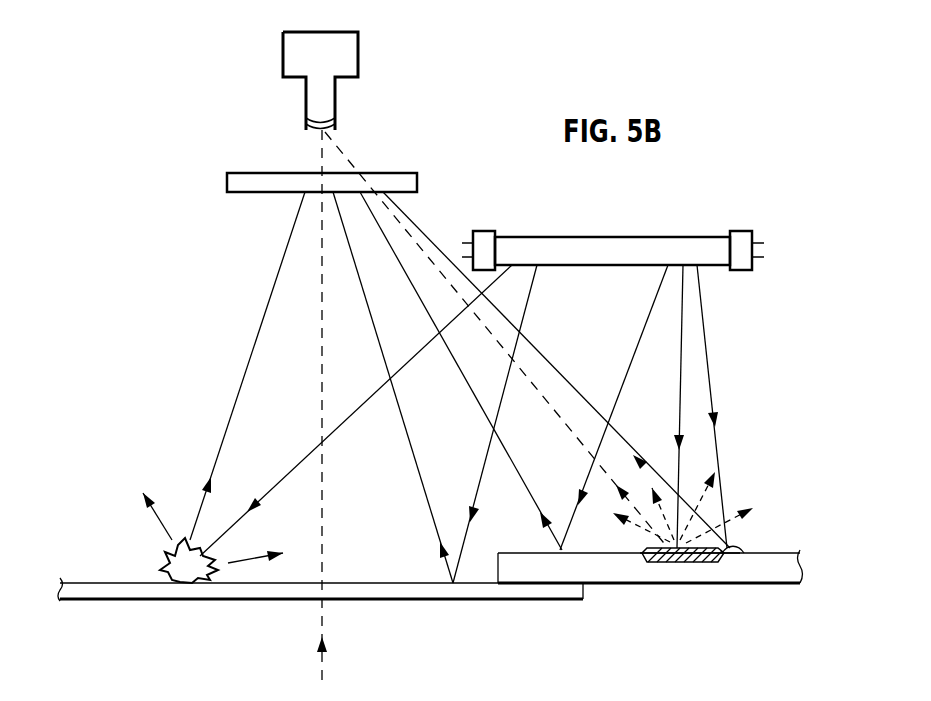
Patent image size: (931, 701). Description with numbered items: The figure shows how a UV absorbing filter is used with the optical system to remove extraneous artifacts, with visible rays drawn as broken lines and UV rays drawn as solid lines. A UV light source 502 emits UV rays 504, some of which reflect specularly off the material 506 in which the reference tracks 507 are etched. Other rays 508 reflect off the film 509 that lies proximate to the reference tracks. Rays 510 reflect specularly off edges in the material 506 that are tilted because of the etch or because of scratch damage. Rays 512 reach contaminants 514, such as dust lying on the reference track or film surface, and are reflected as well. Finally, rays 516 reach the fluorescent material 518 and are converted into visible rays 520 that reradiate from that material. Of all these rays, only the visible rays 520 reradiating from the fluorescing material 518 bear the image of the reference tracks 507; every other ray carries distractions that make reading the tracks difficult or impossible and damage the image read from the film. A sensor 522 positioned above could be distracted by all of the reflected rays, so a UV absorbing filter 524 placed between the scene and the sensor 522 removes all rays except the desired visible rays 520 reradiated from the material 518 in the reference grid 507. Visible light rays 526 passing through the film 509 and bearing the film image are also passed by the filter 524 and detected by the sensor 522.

The UV light source 502 is at (670, 237).
The UV rays 504 is at (637, 345).
The material 506 is at (757, 583).
The reference tracks 507 is at (695, 562).
The rays 508 is at (530, 293).
The film 509 is at (455, 598).
The rays 510 is at (713, 392).
The rays 512 is at (453, 327).
The contaminants 514 is at (163, 555).
The rays 516 is at (680, 372).
The fluorescent material 518 is at (665, 562).
The visible rays 520 is at (547, 397).
The sensor 522 is at (358, 43).
The UV absorbing filter 524 is at (413, 173).
The visible light rays 526 is at (323, 657).